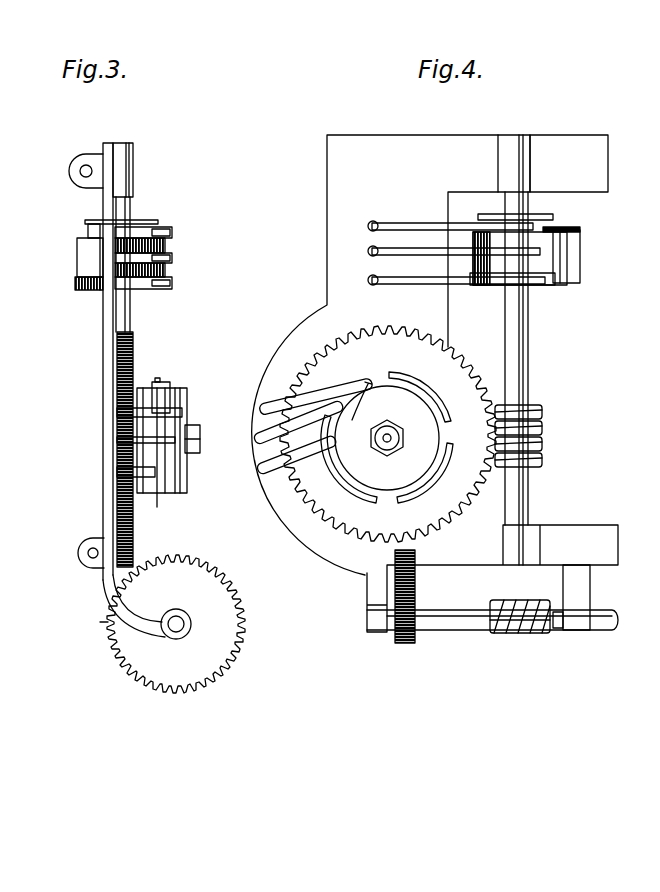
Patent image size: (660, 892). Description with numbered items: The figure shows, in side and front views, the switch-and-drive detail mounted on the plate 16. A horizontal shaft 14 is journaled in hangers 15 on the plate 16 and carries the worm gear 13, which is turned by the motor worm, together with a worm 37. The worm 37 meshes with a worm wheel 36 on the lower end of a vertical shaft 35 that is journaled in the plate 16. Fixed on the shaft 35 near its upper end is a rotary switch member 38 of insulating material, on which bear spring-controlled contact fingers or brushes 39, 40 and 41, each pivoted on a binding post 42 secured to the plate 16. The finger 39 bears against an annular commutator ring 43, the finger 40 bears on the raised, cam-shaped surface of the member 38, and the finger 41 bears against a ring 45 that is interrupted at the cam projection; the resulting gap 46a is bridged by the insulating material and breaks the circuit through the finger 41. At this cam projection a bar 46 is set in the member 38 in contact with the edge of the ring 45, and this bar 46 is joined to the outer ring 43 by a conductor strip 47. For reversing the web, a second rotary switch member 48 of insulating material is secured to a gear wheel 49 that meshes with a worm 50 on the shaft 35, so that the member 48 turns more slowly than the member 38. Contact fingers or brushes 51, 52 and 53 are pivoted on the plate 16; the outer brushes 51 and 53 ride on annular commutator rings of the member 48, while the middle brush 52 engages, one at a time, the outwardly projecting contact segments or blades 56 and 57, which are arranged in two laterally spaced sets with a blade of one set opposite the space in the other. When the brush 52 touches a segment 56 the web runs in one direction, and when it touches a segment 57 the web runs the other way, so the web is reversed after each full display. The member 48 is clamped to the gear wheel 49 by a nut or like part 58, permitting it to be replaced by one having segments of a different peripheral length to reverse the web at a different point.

In FIG. 3, the worm gear 13 is at (220, 628).
In FIG. 4, the worm gear 13 is at (417, 672).
In FIG. 3, the shaft 14 is at (176, 628).
In FIG. 4, the shaft 14 is at (463, 631).
In FIG. 3, the hanger 15 is at (112, 582).
In FIG. 4, the hanger 15 is at (378, 590).
In FIG. 3, the plate 16 is at (103, 321).
In FIG. 4, the plate 16 is at (345, 167).
In FIG. 3, the vertical shaft 35 is at (132, 321).
In FIG. 4, the vertical shaft 35 is at (530, 360).
In FIG. 3, the worm wheel 36 is at (100, 626).
In FIG. 4, the worm wheel 36 is at (565, 632).
In FIG. 4, the worm 37 is at (521, 636).
In FIG. 3, the rotary switch member 38 is at (76, 262).
In FIG. 4, the rotary switch member 38 is at (552, 300).
In FIG. 3, the contact finger 39 is at (173, 233).
In FIG. 4, the contact finger 39 is at (400, 222).
In FIG. 3, the contact finger 40 is at (173, 259).
In FIG. 4, the contact finger 40 is at (371, 251).
In FIG. 3, the contact finger 41 is at (173, 285).
In FIG. 4, the contact finger 41 is at (410, 285).
In FIG. 4, the binding post 42 is at (372, 221).
In FIG. 3, the annular commutator ring 43 is at (84, 233).
In FIG. 4, the annular commutator ring 43 is at (555, 219).
In FIG. 4, the ring 45 is at (488, 288).
In FIG. 4, the bar 46 is at (582, 252).
In FIG. 4, the gap 46a is at (556, 282).
In FIG. 4, the conductor strip 47 is at (581, 232).
In FIG. 3, the rotary switch member 48 is at (188, 480).
In FIG. 4, the rotary switch member 48 is at (410, 418).
In FIG. 3, the gear wheel 49 is at (134, 524).
In FIG. 4, the gear wheel 49 is at (458, 372).
In FIG. 4, the worm 50 is at (543, 425).
In FIG. 4, the contact finger 51 is at (305, 456).
In FIG. 3, the contact finger 52 is at (166, 390).
In FIG. 4, the contact finger 52 is at (300, 425).
In FIG. 3, the contact finger 53 is at (178, 420).
In FIG. 4, the contact finger 53 is at (300, 398).
In FIG. 3, the contact segment 56 is at (157, 378).
In FIG. 4, the contact segment 56 is at (367, 384).
In FIG. 4, the contact segment 57 is at (448, 421).
In FIG. 3, the nut 58 is at (201, 445).
In FIG. 4, the nut 58 is at (394, 441).